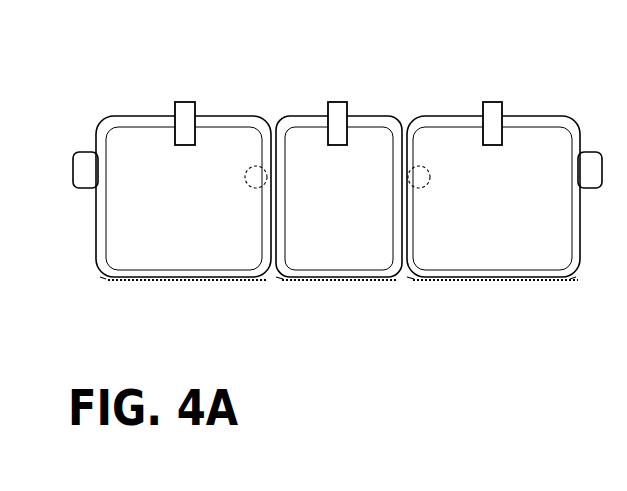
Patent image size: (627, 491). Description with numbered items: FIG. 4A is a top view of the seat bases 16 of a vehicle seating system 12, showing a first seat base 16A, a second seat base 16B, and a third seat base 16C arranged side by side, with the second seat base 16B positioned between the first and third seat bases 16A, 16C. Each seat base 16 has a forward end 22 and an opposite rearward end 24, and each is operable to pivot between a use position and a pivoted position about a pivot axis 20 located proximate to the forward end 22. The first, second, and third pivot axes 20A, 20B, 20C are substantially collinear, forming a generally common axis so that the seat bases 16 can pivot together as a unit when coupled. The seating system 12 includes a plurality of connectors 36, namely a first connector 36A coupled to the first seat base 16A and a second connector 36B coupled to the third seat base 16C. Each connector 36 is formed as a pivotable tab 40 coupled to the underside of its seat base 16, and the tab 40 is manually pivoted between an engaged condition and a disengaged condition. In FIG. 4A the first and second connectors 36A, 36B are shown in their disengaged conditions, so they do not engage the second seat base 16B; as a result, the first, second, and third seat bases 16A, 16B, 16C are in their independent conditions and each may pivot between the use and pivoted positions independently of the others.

The seating system 12 is at (128, 102).
The seat base 16 is at (337, 196).
The first seat base 16A is at (172, 196).
The second seat base 16B is at (339, 196).
The third seat base 16C is at (504, 196).
The pivot axis 20 is at (343, 312).
The first pivot axis 20A is at (185, 280).
The second pivot axis 20B is at (345, 280).
The third pivot axis 20C is at (508, 280).
The forward end 22 is at (153, 280).
The rearward end 24 is at (154, 116).
The connector 36 is at (342, 96).
The first connector 36A is at (253, 146).
The second connector 36B is at (425, 146).
The pivotable tab 40 is at (247, 166).